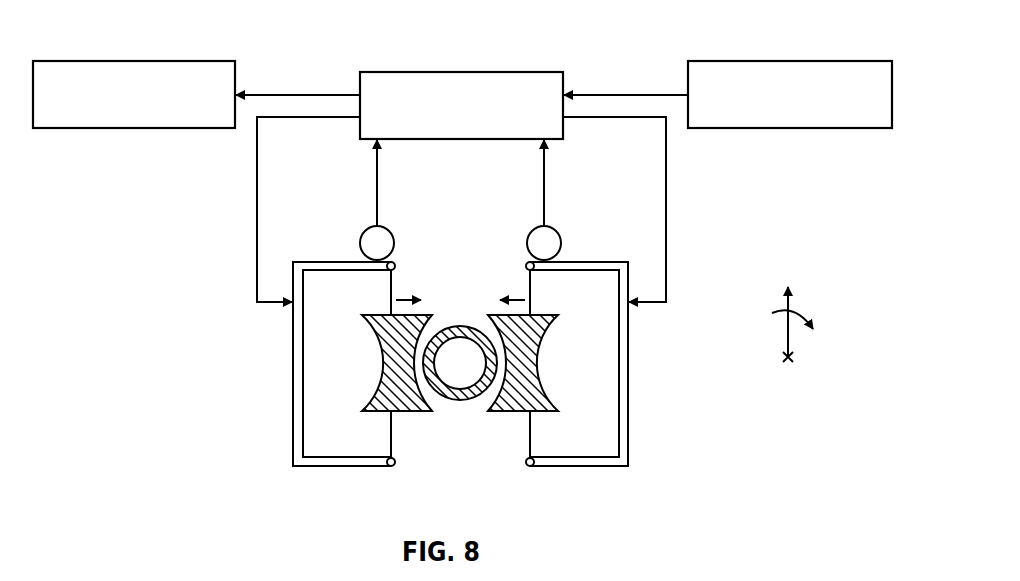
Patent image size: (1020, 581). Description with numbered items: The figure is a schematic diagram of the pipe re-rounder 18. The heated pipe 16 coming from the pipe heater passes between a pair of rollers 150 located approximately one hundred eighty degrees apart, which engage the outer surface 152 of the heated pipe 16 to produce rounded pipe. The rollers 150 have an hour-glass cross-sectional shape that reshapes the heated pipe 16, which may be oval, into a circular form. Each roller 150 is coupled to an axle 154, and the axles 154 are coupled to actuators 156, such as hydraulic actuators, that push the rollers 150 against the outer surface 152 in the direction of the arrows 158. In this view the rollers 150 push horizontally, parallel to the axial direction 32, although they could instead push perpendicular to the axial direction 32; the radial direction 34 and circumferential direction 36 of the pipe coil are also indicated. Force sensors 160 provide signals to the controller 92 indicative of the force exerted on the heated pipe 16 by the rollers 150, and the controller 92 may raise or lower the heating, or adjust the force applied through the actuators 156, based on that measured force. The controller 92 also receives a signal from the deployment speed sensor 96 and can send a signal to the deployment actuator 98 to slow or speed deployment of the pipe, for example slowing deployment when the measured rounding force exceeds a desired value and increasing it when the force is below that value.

The heated pipe 16 is at (463, 326).
The pipe re-rounder 18 is at (577, 30).
The axial axis or direction 32 is at (788, 365).
The radial axis or direction 34 is at (787, 335).
The circumferential axis or direction 36 is at (796, 318).
The controller 92 is at (396, 72).
The deployment speed sensor 96 is at (857, 61).
The deployment actuator 98 is at (70, 61).
The rollers 150 is at (383, 355).
The outer surface 152 is at (462, 434).
The axles 154 is at (390, 312).
The actuators 156 is at (293, 436).
The arrows 158 is at (405, 298).
The force sensors 160 is at (370, 229).